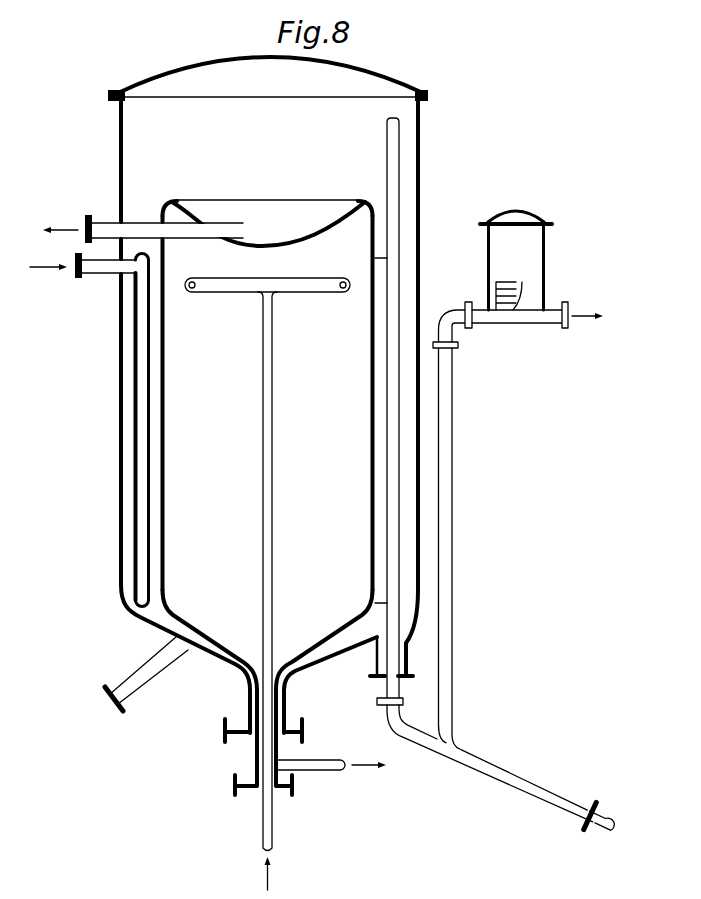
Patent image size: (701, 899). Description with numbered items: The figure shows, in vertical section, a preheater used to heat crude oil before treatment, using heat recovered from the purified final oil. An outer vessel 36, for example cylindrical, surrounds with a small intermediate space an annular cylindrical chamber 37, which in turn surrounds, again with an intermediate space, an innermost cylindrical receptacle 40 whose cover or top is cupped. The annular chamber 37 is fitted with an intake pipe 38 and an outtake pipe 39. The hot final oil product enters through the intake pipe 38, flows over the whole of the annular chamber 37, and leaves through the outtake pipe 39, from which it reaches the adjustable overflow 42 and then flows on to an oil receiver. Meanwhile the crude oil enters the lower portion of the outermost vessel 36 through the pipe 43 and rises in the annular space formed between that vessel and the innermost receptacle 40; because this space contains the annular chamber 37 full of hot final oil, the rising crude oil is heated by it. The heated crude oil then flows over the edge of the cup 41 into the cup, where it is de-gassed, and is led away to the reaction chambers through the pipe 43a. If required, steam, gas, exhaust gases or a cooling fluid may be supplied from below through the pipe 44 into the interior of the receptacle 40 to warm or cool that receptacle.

The vessel 36 is at (122, 378).
The annular cylindrical chamber 37 is at (142, 439).
The intake pipe 38 is at (105, 268).
The outtake pipe 39 is at (447, 554).
The cylindrical receptacle 40 is at (226, 638).
The cup 41 is at (262, 208).
The adjustable overflow 42 is at (521, 284).
The pipe 43 is at (136, 676).
The pipe 43a is at (103, 228).
The pipe 44 is at (262, 820).